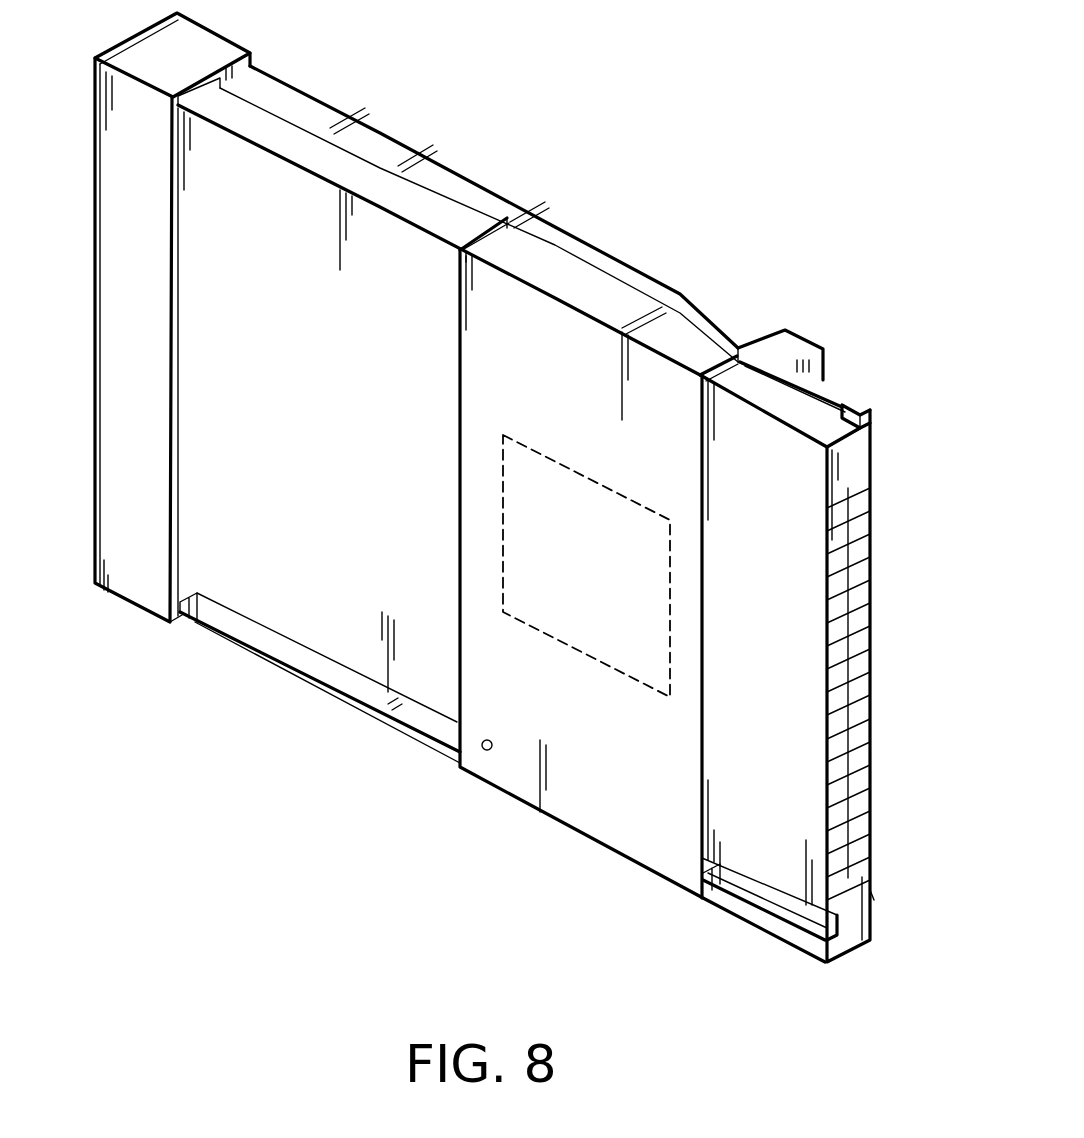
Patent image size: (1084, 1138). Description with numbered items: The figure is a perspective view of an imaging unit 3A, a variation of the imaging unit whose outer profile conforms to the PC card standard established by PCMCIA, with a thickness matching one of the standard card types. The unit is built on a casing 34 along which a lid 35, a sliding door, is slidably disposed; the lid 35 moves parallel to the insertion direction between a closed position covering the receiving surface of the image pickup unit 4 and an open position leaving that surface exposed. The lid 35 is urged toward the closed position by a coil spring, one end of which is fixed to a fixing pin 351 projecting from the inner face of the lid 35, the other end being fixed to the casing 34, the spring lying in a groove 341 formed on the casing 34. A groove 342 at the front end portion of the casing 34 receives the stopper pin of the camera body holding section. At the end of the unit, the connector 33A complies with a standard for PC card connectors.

The imaging unit 3A is at (525, 485).
The casing 34 is at (398, 141).
The lid 35 is at (613, 581).
The image pickup unit 4 is at (587, 500).
The connector 33A is at (862, 502).
The groove 341 is at (302, 657).
The fixing pin 351 is at (480, 752).
The groove 342 is at (795, 910).